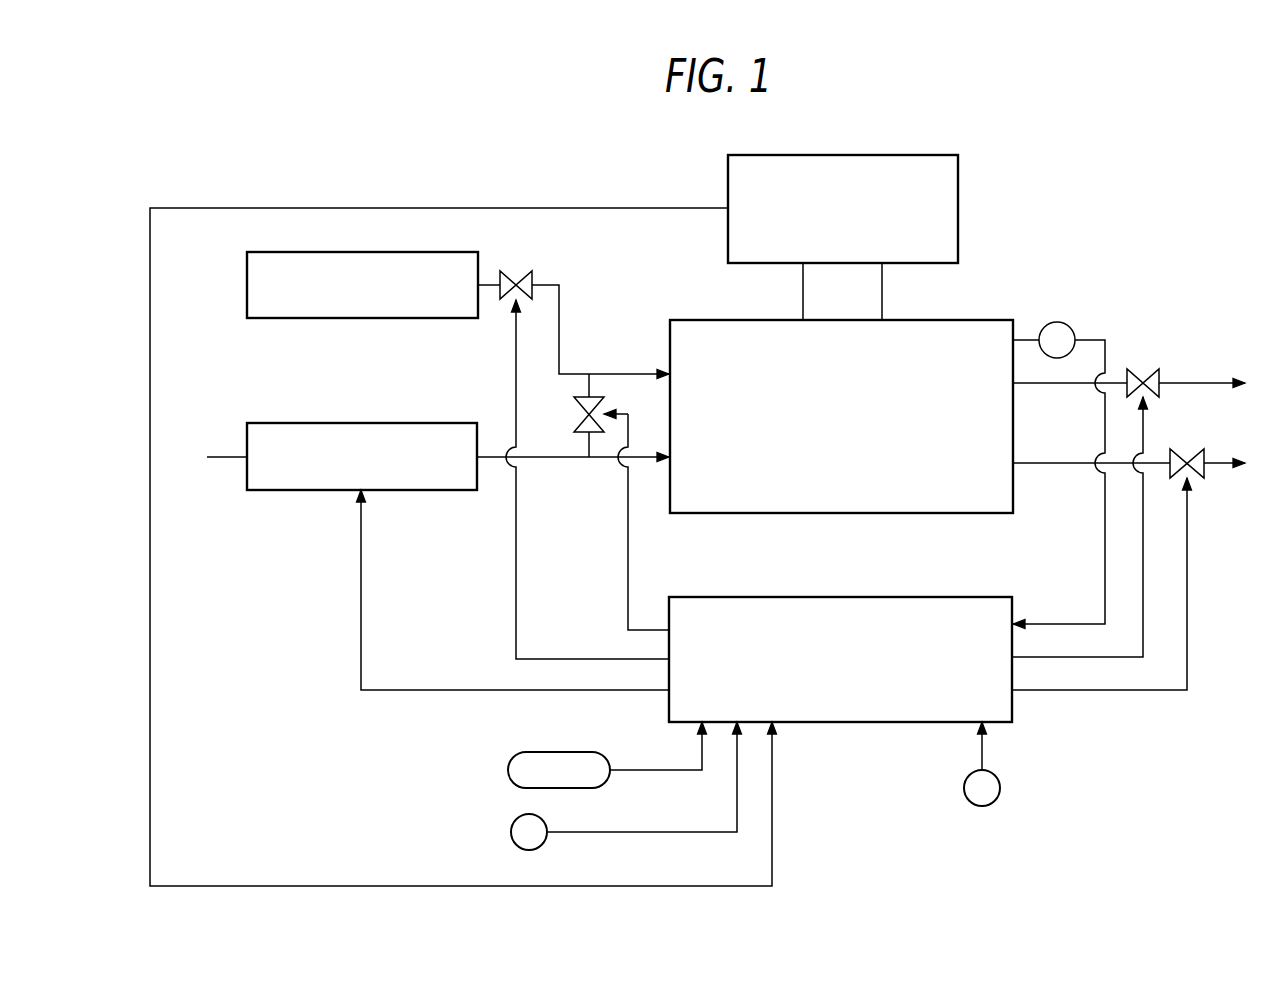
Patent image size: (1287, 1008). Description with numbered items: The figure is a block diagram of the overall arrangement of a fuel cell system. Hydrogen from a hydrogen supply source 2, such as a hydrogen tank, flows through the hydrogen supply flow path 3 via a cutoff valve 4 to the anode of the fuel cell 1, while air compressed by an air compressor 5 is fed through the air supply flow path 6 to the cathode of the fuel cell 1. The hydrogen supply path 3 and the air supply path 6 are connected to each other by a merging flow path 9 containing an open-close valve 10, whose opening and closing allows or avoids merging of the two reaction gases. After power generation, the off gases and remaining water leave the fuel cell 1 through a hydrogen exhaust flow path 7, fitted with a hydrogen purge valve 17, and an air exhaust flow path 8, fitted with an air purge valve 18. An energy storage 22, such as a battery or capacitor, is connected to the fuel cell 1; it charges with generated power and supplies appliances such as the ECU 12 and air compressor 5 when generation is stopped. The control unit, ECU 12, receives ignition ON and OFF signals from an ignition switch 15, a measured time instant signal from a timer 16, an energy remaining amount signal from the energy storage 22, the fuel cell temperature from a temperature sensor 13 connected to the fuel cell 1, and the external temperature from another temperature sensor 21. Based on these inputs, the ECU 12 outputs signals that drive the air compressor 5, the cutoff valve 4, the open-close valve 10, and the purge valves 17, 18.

The fuel cell 1 is at (970, 320).
The hydrogen supply source 2 is at (247, 266).
The hydrogen supply flow path 3 is at (560, 324).
The cutoff valve 4 is at (511, 272).
The air compressor 5 is at (247, 437).
The air supply flow path 6 is at (545, 458).
The hydrogen exhaust flow path 7 is at (1196, 383).
The air exhaust flow path 8 is at (1213, 463).
The merging flow path 9 is at (583, 452).
The open-close valve 10 is at (578, 405).
The ECU 12 is at (970, 597).
The temperature sensor 13 is at (1062, 322).
The ignition switch 15 is at (508, 768).
The timer 16 is at (511, 830).
The hydrogen purge valve 17 is at (1130, 368).
The air purge valve 18 is at (1178, 449).
The temperature sensor 21 is at (1000, 787).
The energy storage 22 is at (908, 155).